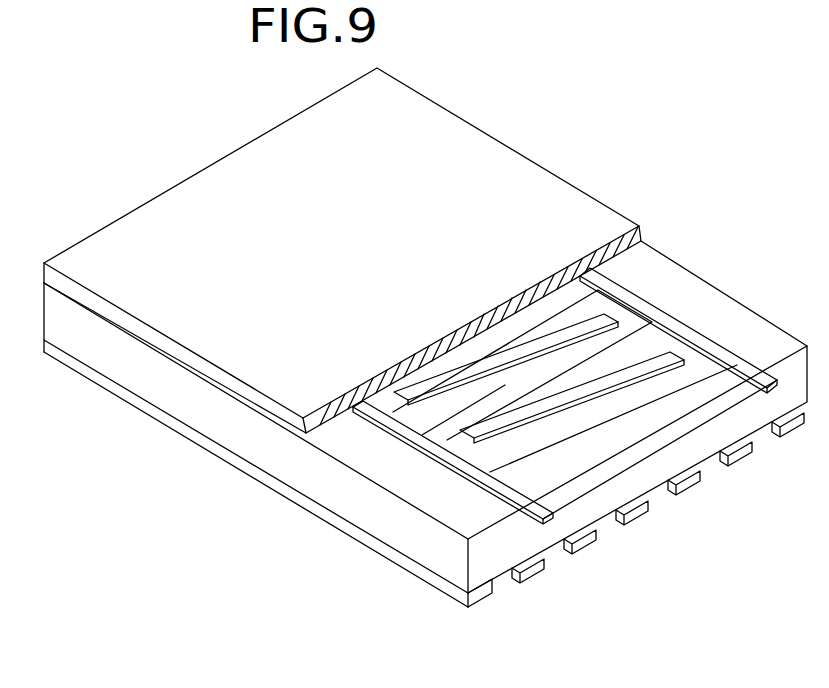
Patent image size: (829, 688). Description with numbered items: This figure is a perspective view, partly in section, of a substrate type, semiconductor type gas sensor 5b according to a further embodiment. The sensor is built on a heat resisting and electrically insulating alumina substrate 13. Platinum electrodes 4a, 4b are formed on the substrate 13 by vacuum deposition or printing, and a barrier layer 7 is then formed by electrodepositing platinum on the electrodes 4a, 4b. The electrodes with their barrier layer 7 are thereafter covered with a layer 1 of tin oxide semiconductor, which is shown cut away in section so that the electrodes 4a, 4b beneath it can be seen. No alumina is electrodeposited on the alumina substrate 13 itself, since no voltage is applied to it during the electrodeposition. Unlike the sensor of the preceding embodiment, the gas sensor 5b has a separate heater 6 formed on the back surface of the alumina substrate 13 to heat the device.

The layer of tin oxide semiconductor 1 is at (643, 230).
The platinum electrode 4a is at (549, 518).
The platinum electrode 4b is at (770, 394).
The substrate type, semiconductor type gas sensor 5b is at (514, 141).
The heater 6 is at (492, 599).
The barrier layer 7 is at (358, 406).
The alumina substrate 13 is at (383, 518).